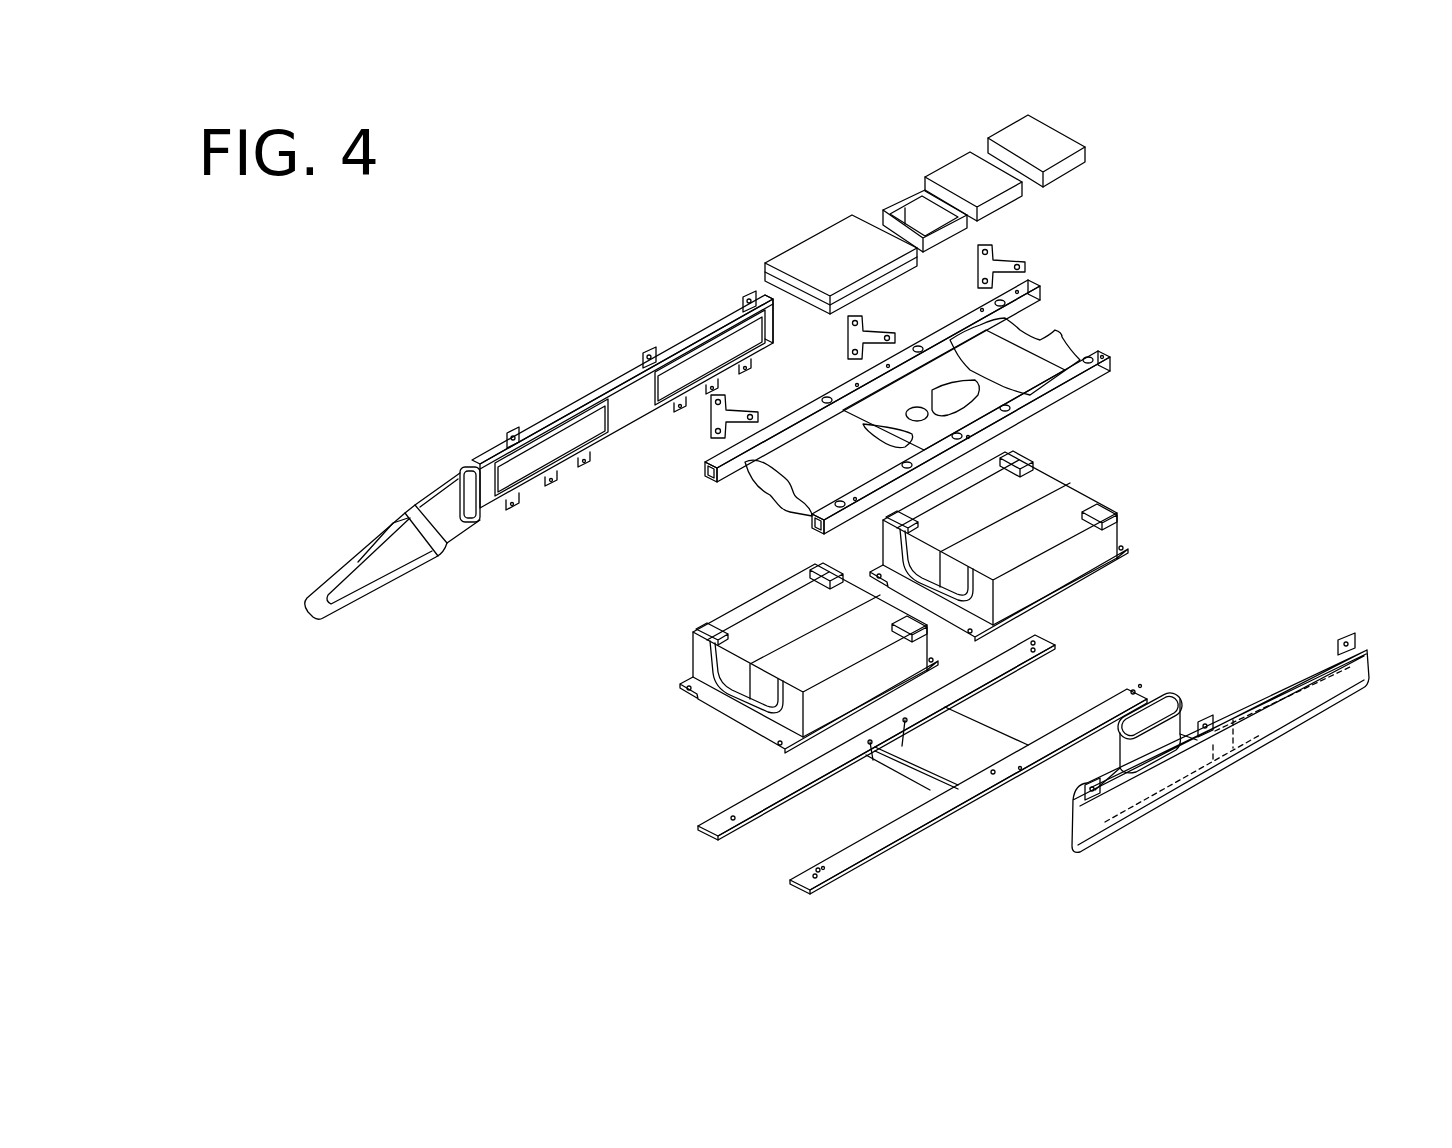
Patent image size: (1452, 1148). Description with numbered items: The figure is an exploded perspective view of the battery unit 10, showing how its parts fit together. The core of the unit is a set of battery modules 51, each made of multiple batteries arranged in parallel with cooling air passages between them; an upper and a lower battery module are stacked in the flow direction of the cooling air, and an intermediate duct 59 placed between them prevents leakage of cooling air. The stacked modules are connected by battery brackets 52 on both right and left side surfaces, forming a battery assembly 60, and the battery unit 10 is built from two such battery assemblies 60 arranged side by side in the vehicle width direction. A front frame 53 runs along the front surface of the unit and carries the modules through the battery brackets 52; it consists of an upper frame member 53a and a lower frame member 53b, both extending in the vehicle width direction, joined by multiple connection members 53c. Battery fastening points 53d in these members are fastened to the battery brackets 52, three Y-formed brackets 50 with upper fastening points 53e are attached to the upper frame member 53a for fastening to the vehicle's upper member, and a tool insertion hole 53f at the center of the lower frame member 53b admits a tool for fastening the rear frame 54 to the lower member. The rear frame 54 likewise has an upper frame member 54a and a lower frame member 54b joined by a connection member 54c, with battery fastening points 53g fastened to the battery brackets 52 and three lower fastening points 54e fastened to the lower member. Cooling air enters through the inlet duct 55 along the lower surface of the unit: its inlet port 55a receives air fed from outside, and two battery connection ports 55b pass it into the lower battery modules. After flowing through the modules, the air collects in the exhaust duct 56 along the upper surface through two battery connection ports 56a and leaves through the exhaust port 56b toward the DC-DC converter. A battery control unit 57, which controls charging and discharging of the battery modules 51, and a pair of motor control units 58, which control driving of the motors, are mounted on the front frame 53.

The battery unit 10 is at (1185, 377).
The Y-formed bracket 50 is at (975, 272).
The battery module 51 is at (1060, 510).
The battery bracket 52 is at (1122, 527).
The front frame 53 is at (738, 489).
The upper frame member 53a is at (705, 475).
The lower frame member 53b is at (812, 524).
The connection member 53c is at (1060, 335).
The battery fastening point 53d is at (920, 345).
The upper fastening point 53e is at (990, 250).
The tool insertion hole 53f is at (960, 436).
The battery fastening point 53g is at (1033, 650).
The rear frame 54 is at (698, 833).
The upper frame member 54a is at (717, 818).
The lower frame member 54b is at (887, 833).
The connection member 54c is at (967, 745).
The lower fastening point 54e is at (1133, 695).
The inlet duct 55 is at (1218, 748).
The inlet port 55a is at (1168, 703).
The battery connection port 55b is at (1318, 722).
The exhaust duct 56 is at (615, 383).
The battery connection port 56a is at (710, 357).
The exhaust port 56b is at (383, 560).
The battery control unit 57 is at (815, 245).
The motor control unit 58 is at (953, 168).
The intermediate duct 59 is at (988, 530).
The battery assembly 60 is at (1095, 580).